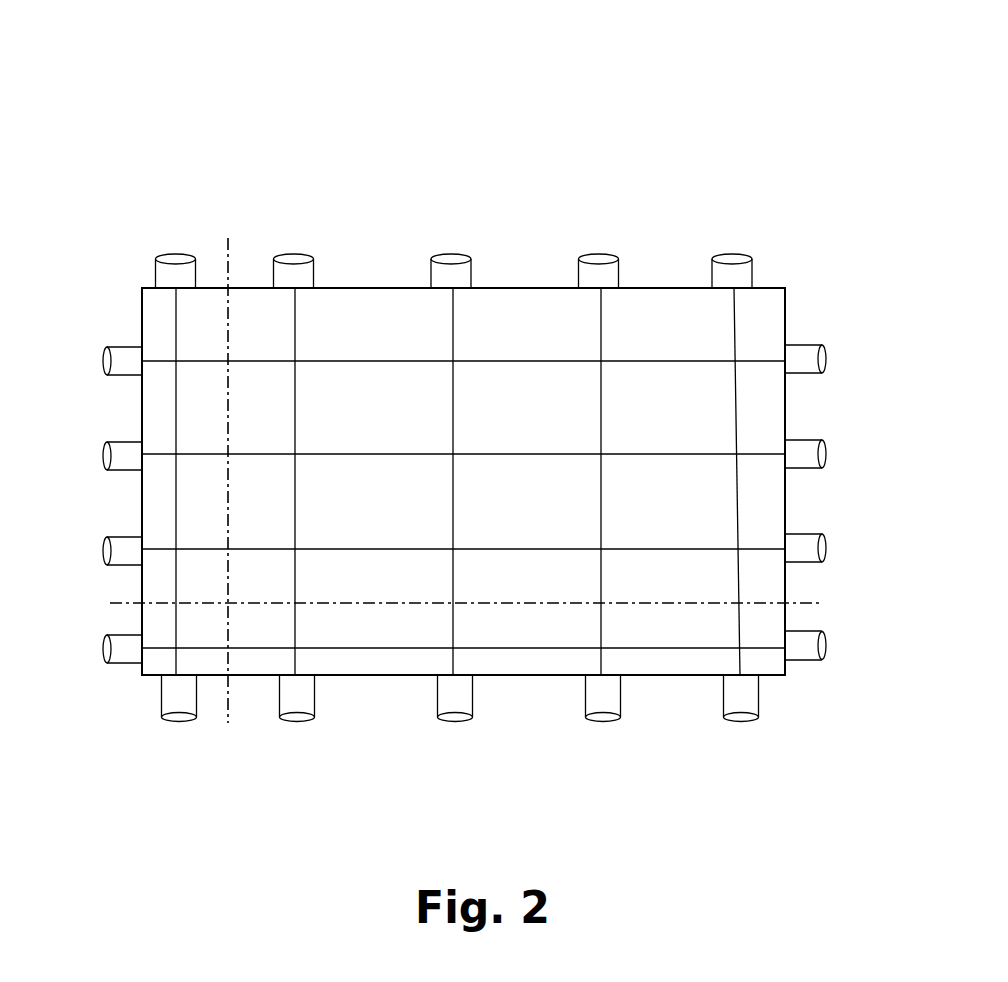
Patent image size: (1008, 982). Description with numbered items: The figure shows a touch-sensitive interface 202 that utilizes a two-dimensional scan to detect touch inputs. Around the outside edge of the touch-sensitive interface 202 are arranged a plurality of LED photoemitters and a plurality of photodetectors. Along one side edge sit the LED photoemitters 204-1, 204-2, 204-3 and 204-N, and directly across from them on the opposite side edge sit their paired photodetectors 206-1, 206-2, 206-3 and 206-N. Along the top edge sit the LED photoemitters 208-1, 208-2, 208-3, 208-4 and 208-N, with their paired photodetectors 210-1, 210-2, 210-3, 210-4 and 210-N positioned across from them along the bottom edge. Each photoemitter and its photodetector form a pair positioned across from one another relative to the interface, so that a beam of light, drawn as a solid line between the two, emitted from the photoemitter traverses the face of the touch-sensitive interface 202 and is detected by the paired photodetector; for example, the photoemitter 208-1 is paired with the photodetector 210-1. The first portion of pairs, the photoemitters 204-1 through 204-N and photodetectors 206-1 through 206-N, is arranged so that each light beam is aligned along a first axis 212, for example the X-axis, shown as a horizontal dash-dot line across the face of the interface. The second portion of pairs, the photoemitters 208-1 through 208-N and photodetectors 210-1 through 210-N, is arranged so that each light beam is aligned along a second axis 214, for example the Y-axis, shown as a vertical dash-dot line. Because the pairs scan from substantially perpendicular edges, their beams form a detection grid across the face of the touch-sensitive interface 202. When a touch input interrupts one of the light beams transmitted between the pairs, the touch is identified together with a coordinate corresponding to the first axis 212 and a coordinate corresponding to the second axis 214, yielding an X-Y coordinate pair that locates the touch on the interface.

The touch-sensitive interface 202 is at (197, 79).
The LED photoemitter 204-1 is at (104, 361).
The LED photoemitter 204-2 is at (104, 456).
The LED photoemitter 204-3 is at (104, 551).
The LED photoemitter 204-N is at (104, 649).
The photodetector 206-1 is at (826, 357).
The photodetector 206-2 is at (826, 452).
The photodetector 206-3 is at (826, 547).
The photodetector 206-N is at (826, 644).
The LED photoemitter 208-1 is at (176, 257).
The LED photoemitter 208-2 is at (294, 257).
The LED photoemitter 208-3 is at (452, 257).
The LED photoemitter 208-4 is at (598, 257).
The LED photoemitter 208-N is at (733, 257).
The photodetector 210-1 is at (178, 719).
The photodetector 210-2 is at (297, 719).
The photodetector 210-3 is at (455, 719).
The photodetector 210-4 is at (603, 719).
The photodetector 210-N is at (741, 719).
The first axis 212 is at (112, 603).
The second axis 214 is at (228, 698).